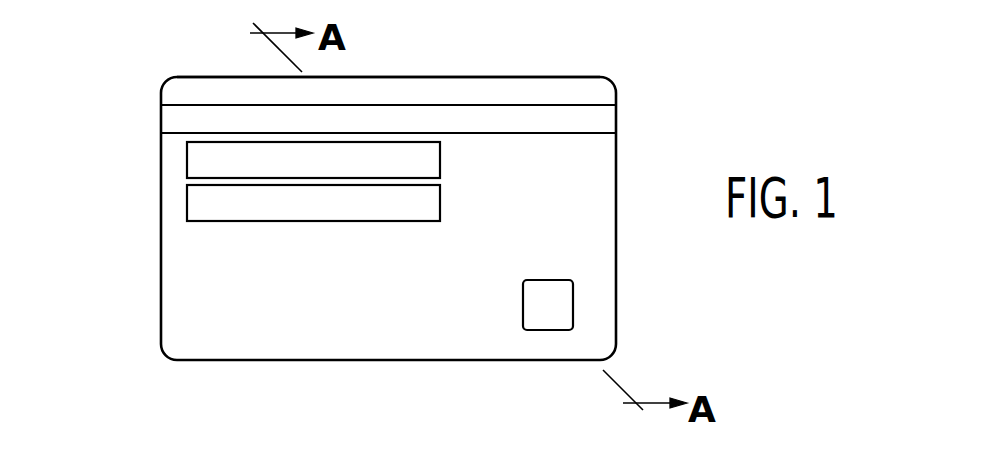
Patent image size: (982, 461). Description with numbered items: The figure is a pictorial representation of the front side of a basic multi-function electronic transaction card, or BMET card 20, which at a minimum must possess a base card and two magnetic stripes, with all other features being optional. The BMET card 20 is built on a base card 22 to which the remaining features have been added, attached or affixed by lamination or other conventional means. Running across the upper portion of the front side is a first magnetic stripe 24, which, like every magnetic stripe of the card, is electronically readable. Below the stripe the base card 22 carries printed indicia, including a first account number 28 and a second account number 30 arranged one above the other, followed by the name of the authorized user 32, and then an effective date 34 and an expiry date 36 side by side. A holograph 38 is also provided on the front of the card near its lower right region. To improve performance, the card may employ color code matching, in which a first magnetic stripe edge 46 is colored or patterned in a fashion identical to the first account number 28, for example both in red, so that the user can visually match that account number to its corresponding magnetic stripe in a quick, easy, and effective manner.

The BMET card 20 is at (183, 372).
The base card 22 is at (607, 77).
The first magnetic stripe 24 is at (616, 118).
The first account number 28 is at (187, 163).
The second account number 30 is at (187, 205).
The authorized user 32 is at (505, 243).
The effective date 34 is at (203, 291).
The expiry date 36 is at (323, 291).
The holograph 38 is at (573, 302).
The first magnetic stripe edge 46 is at (277, 85).